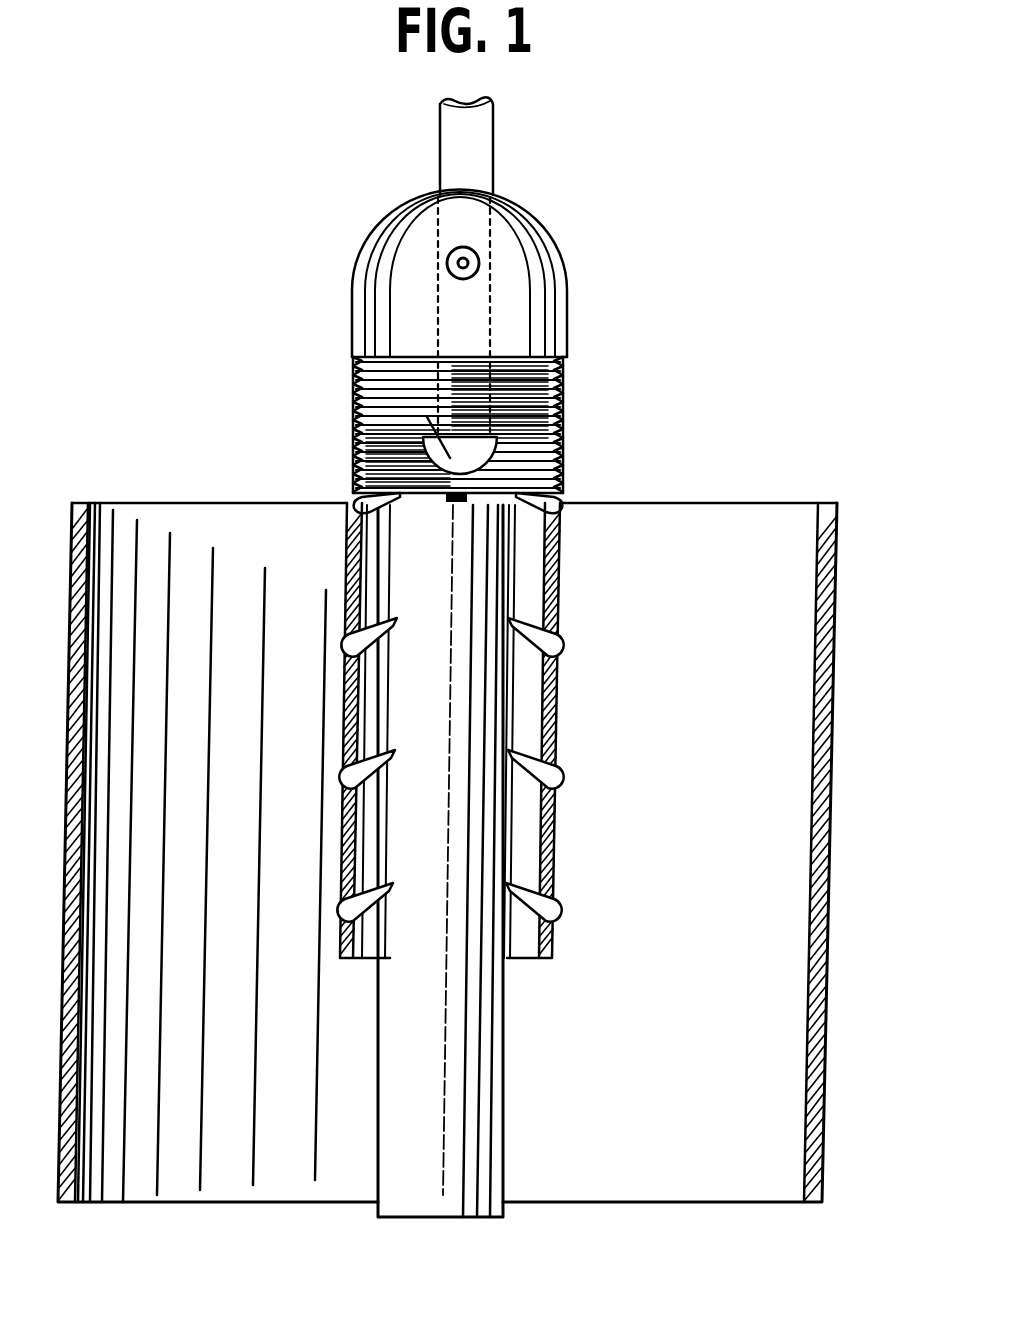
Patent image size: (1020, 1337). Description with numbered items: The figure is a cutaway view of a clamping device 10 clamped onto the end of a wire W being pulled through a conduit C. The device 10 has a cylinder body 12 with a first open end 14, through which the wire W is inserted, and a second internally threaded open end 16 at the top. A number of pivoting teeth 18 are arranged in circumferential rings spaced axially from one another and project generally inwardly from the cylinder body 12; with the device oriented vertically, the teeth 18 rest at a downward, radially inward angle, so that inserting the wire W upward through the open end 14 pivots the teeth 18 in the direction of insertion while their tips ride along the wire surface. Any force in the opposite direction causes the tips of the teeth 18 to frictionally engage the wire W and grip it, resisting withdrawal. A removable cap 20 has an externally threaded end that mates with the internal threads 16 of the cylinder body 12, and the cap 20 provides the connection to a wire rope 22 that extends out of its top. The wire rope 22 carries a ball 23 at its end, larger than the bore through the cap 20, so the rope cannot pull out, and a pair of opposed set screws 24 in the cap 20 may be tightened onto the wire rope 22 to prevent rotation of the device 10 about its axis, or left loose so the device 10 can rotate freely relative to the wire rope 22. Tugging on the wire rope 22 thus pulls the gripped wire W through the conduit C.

The clamping device 10 is at (514, 576).
The cylinder body 12 is at (512, 391).
The first open end 14 is at (547, 963).
The second internally threaded open end 16 is at (563, 352).
The pivoting teeth 18 is at (537, 763).
The removable cap 20 is at (413, 242).
The wire rope 22 is at (472, 143).
The ball 23 is at (352, 425).
The set screws 24 is at (476, 256).
The conduit C is at (797, 788).
The wire W is at (455, 1172).